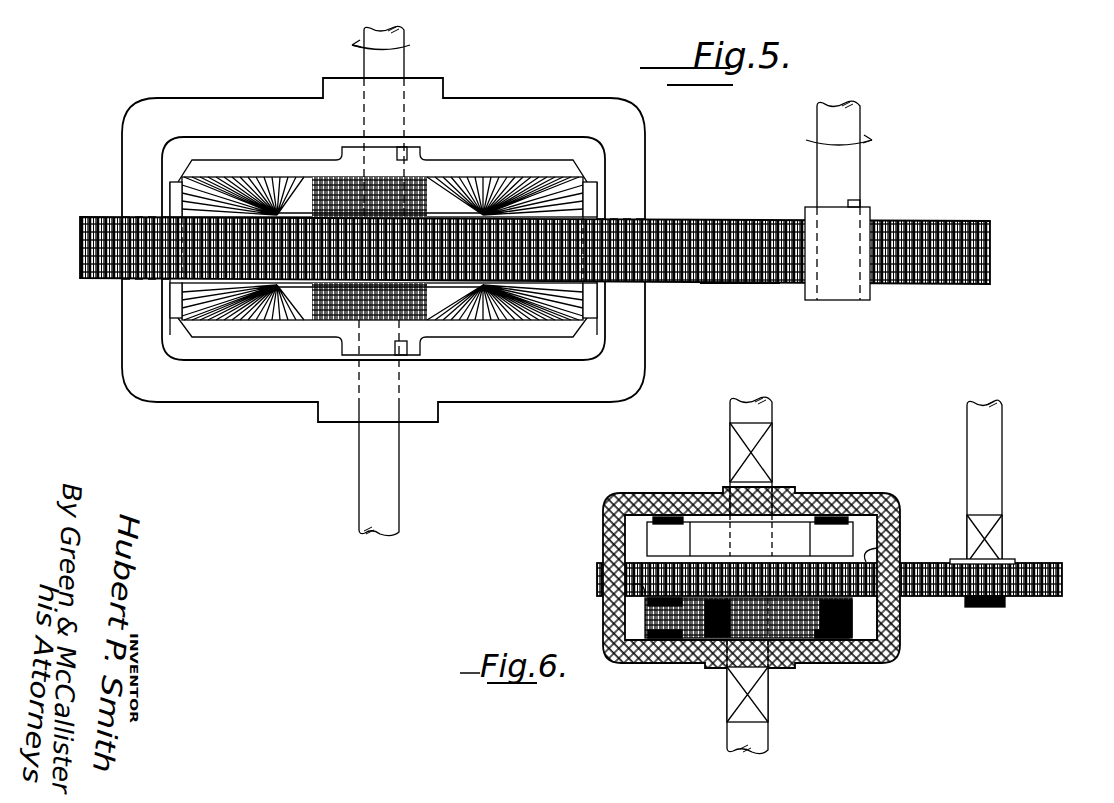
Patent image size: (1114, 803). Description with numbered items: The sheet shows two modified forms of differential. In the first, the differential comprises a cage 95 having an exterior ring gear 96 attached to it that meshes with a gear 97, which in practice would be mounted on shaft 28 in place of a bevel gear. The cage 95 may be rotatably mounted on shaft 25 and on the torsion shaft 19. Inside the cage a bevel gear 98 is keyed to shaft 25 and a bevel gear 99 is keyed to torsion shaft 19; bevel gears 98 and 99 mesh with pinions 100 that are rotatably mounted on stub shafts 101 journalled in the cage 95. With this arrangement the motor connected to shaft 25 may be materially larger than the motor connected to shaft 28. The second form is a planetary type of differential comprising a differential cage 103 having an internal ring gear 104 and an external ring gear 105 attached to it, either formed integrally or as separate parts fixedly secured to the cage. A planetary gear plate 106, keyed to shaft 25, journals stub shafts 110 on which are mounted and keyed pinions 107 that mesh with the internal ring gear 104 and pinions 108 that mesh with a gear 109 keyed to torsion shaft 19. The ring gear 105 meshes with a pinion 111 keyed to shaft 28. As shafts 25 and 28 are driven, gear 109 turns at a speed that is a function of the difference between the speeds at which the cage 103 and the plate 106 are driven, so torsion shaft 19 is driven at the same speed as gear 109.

In FIG. 5, the torsion shaft 19 is at (385, 505).
In FIG. 6, the torsion shaft 19 is at (735, 733).
In FIG. 5, the shaft 25 is at (404, 37).
In FIG. 6, the shaft 25 is at (772, 414).
In FIG. 5, the shaft 28 is at (860, 117).
In FIG. 6, the shaft 28 is at (1002, 460).
In FIG. 5, the cage 95 is at (637, 145).
In FIG. 5, the exterior ring gear 96 is at (665, 218).
In FIG. 5, the gear 97 is at (736, 282).
In FIG. 5, the bevel gear 98 is at (513, 170).
In FIG. 5, the bevel gear 99 is at (530, 340).
In FIG. 5, the pinions 100 is at (177, 315).
In FIG. 5, the stub shafts 101 is at (130, 215).
In FIG. 6, the differential cage 103 is at (898, 508).
In FIG. 6, the internal ring gear 104 is at (898, 608).
In FIG. 6, the external ring gear 105 is at (903, 563).
In FIG. 6, the planetary gear plate 106 is at (803, 530).
In FIG. 6, the pinions 107 is at (635, 585).
In FIG. 6, the pinions 108 is at (668, 640).
In FIG. 6, the gear 109 is at (797, 640).
In FIG. 6, the stub shafts 110 is at (668, 517).
In FIG. 6, the pinion 111 is at (1035, 598).